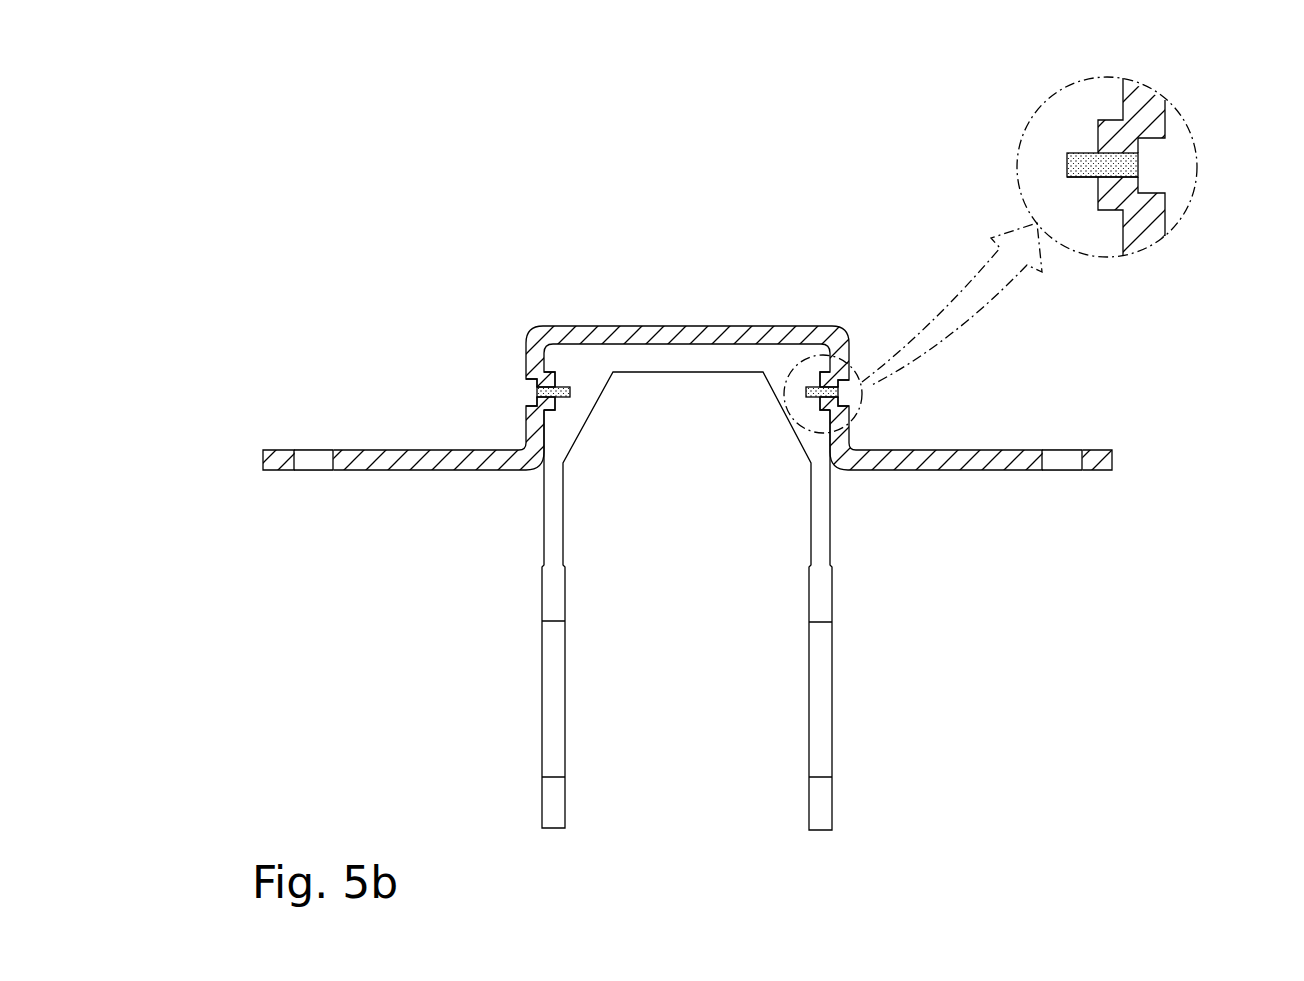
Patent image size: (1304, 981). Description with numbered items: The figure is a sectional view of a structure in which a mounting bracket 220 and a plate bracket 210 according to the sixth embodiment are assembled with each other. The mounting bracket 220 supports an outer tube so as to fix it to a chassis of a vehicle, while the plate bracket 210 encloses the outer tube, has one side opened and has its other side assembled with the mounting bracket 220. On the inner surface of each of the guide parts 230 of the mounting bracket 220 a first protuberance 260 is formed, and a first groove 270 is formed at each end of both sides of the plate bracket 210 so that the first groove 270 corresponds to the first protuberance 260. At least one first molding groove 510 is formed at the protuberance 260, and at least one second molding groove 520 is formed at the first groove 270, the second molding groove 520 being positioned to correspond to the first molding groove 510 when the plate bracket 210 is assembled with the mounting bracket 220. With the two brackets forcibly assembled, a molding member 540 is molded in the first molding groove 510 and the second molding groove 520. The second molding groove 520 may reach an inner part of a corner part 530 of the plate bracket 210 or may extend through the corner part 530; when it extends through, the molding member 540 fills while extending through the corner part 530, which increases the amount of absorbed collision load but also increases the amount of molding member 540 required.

The plate bracket 210 is at (830, 605).
The mounting bracket 220 is at (809, 319).
The guide parts 230 is at (838, 432).
The first protuberance 260 is at (538, 392).
The first groove 270 is at (557, 377).
The first molding groove 510 is at (536, 380).
The second molding groove 520 is at (567, 397).
The corner part 530 is at (806, 395).
The molding member 540 is at (1083, 177).